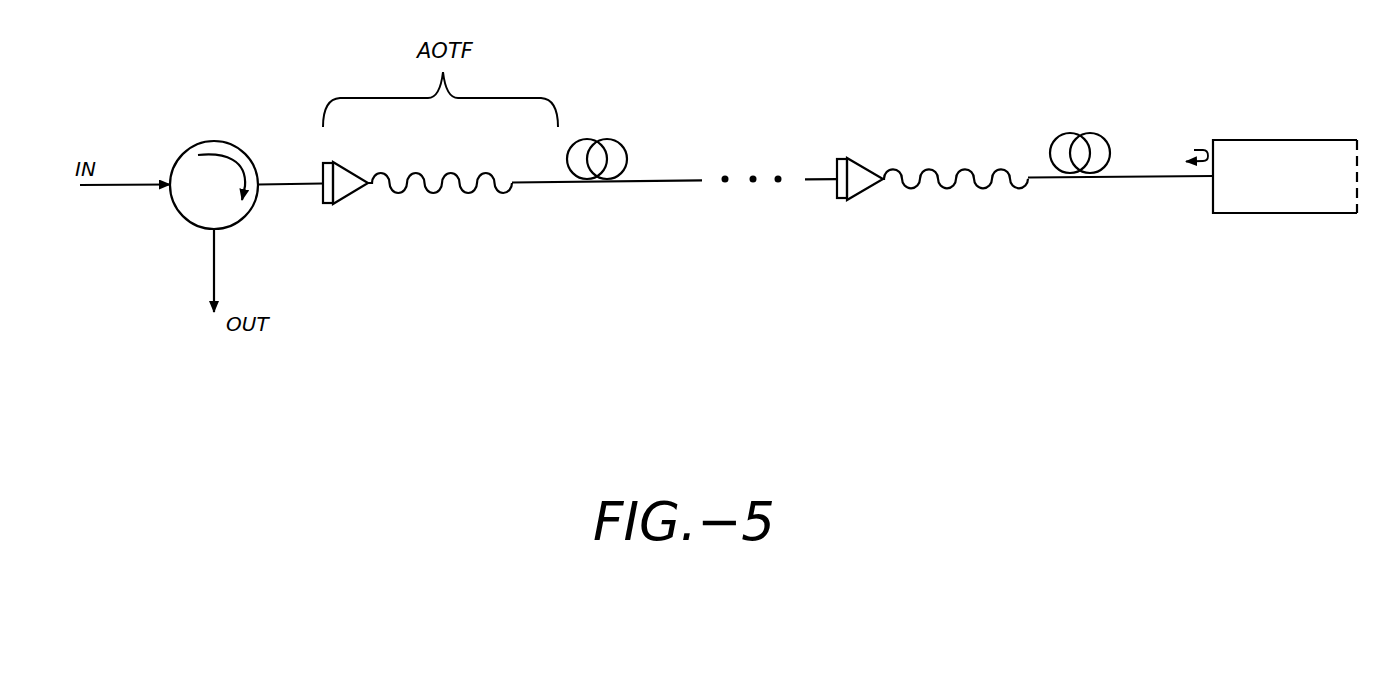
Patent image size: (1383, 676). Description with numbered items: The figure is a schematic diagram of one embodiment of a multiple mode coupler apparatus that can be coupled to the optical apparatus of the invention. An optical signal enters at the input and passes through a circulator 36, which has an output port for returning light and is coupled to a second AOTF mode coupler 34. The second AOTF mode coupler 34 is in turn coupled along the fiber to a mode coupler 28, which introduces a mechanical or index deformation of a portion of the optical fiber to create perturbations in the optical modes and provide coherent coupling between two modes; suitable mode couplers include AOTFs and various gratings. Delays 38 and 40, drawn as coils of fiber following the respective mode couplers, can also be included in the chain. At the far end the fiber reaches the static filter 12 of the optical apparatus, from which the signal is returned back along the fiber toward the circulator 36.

The static filter 12 is at (1258, 140).
The mode coupler 28 is at (858, 170).
The second AOTF mode coupler 34 is at (335, 200).
The circulator 36 is at (228, 145).
The delay 38 is at (608, 142).
The delay 40 is at (1102, 138).